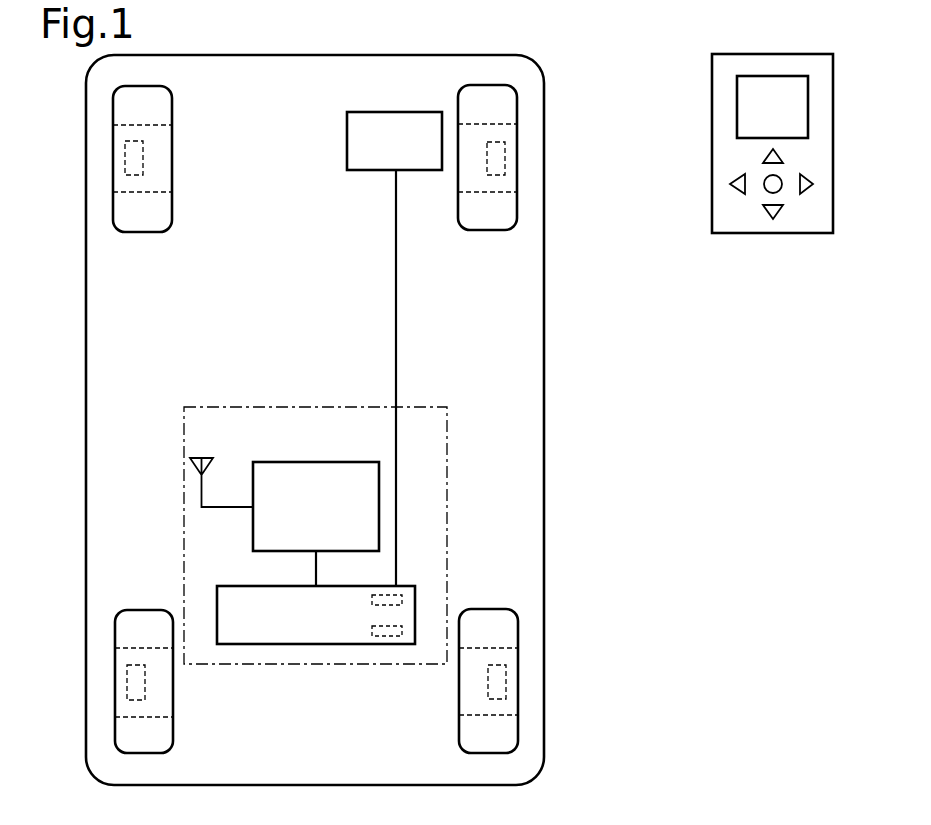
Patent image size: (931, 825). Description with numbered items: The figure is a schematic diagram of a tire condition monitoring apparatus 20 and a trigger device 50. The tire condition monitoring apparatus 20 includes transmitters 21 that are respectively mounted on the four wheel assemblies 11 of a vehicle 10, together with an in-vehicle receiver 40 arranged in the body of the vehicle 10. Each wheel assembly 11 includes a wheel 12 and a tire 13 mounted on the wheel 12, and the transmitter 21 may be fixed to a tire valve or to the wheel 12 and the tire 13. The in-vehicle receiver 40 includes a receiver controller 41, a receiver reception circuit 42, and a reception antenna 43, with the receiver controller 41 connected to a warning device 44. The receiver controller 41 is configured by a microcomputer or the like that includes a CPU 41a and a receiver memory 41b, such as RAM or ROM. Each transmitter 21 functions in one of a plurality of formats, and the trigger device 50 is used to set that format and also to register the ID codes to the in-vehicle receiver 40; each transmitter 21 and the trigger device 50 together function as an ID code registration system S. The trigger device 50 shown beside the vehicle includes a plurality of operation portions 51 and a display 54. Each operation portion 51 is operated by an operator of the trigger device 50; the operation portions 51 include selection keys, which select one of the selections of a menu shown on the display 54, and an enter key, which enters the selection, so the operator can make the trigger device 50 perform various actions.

The vehicle 10 is at (545, 70).
The wheel assembly 11 is at (317, 430).
The wheel 12 is at (126, 193).
The tire 13 is at (131, 231).
The transmitter 21 is at (125, 158).
The tire condition monitoring apparatus 20 is at (256, 367).
The in-vehicle receiver 40 is at (184, 563).
The receiver controller 41 is at (228, 586).
The CPU 41a is at (402, 585).
The receiver memory 41b is at (386, 645).
The receiver reception circuit 42 is at (283, 462).
The reception antenna 43 is at (207, 457).
The warning device 44 is at (396, 112).
The trigger device 50 is at (773, 236).
The operation portion 51 is at (785, 156).
The display 54 is at (745, 106).
The ID code registration system S is at (638, 381).